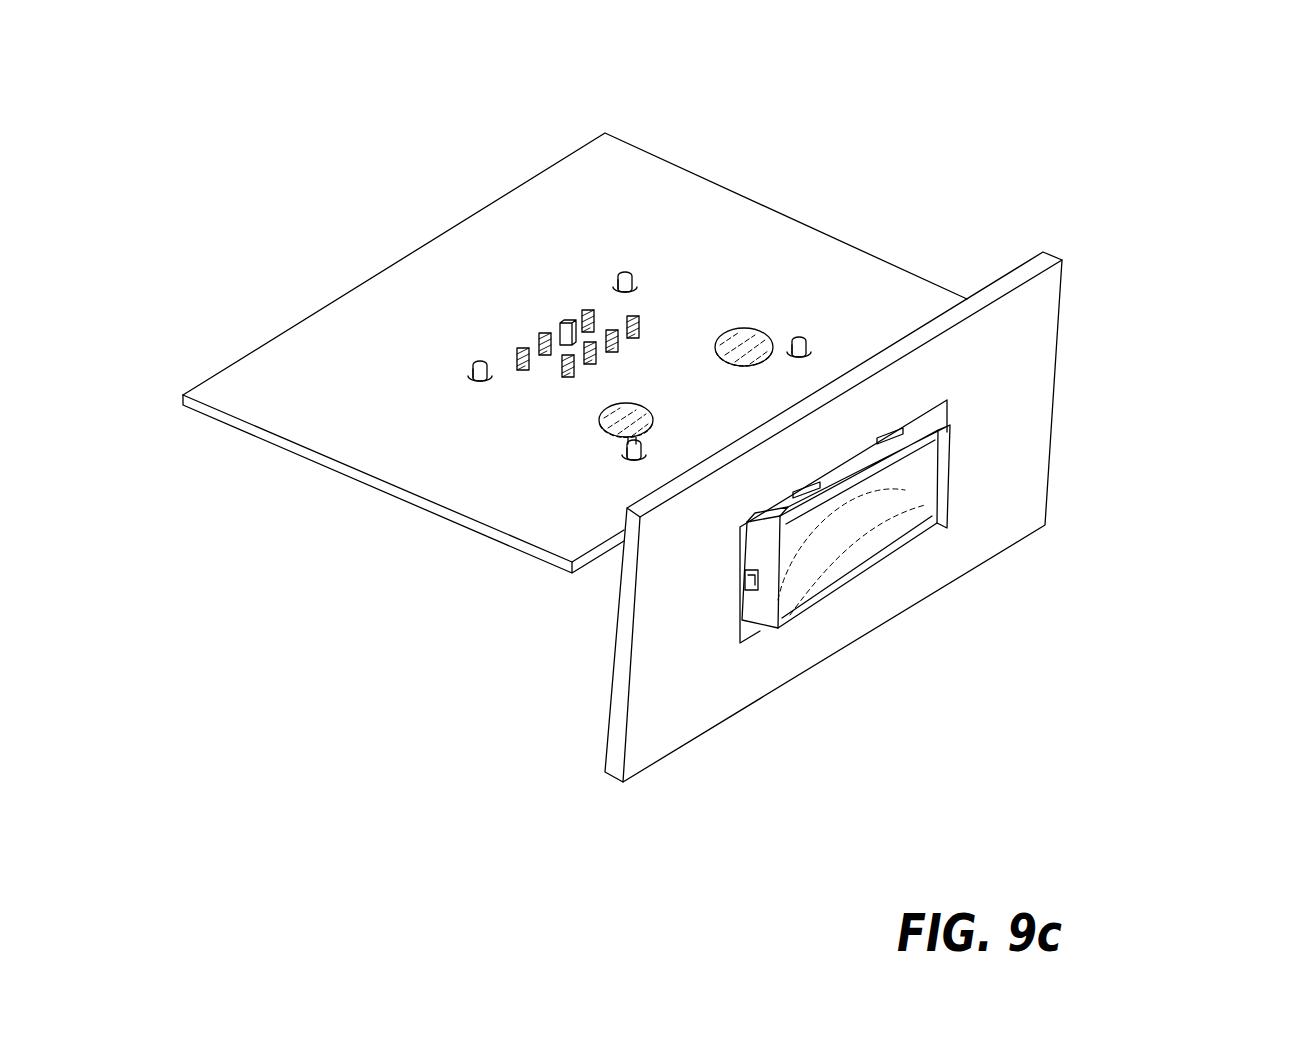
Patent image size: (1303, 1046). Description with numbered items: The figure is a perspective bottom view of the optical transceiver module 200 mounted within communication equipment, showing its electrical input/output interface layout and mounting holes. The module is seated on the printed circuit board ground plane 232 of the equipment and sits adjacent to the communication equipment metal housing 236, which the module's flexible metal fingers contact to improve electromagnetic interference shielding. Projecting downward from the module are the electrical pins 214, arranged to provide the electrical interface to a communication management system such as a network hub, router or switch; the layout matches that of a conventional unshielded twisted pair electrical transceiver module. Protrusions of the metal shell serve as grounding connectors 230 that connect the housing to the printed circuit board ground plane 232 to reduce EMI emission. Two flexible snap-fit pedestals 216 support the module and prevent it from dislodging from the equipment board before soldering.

The optical transceiver module 200 is at (1073, 145).
The electrical pins 214 is at (540, 313).
The snap-fit pedestals 216 is at (657, 448).
The grounding connectors 230 is at (465, 402).
The printed circuit board ground plane 232 is at (323, 375).
The communication equipment metal housing 236 is at (1043, 353).